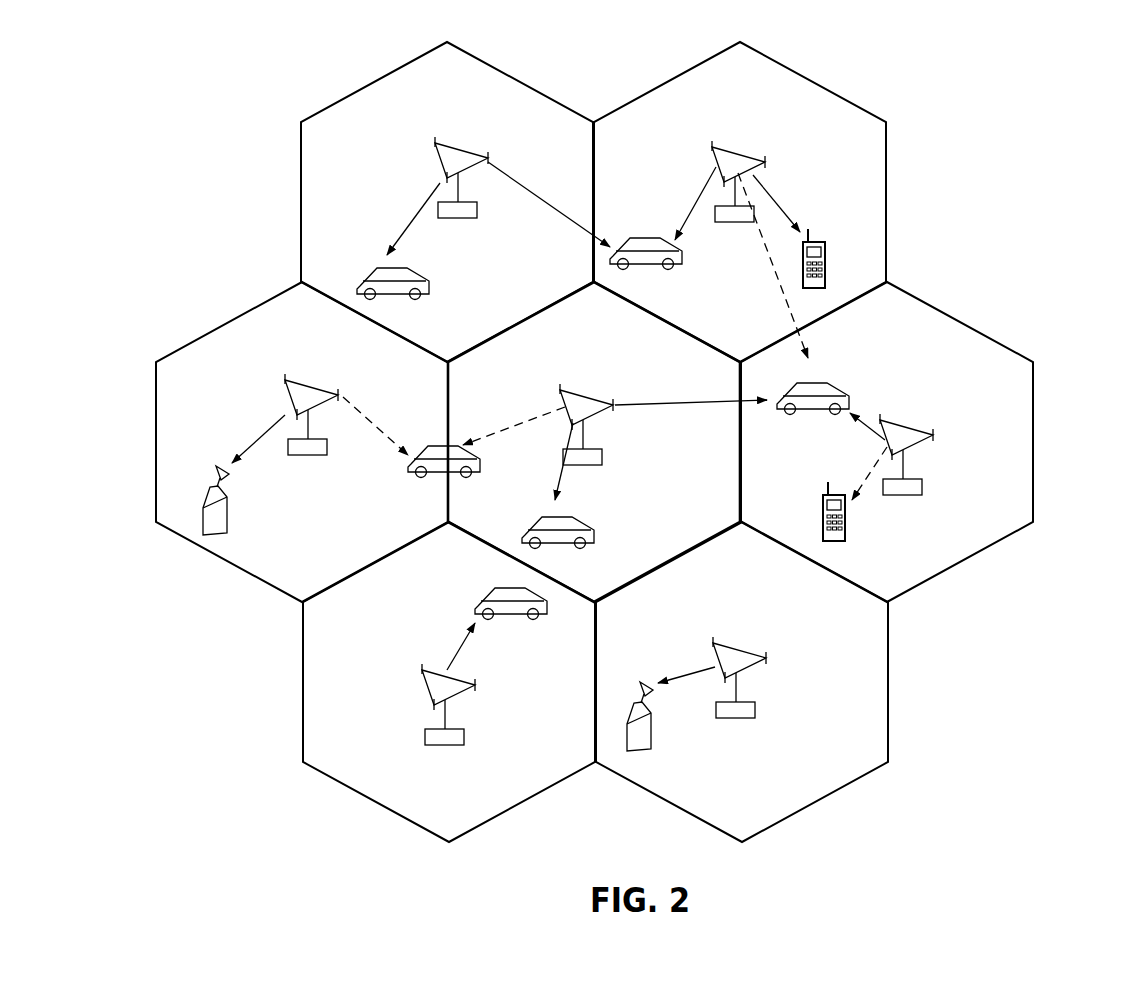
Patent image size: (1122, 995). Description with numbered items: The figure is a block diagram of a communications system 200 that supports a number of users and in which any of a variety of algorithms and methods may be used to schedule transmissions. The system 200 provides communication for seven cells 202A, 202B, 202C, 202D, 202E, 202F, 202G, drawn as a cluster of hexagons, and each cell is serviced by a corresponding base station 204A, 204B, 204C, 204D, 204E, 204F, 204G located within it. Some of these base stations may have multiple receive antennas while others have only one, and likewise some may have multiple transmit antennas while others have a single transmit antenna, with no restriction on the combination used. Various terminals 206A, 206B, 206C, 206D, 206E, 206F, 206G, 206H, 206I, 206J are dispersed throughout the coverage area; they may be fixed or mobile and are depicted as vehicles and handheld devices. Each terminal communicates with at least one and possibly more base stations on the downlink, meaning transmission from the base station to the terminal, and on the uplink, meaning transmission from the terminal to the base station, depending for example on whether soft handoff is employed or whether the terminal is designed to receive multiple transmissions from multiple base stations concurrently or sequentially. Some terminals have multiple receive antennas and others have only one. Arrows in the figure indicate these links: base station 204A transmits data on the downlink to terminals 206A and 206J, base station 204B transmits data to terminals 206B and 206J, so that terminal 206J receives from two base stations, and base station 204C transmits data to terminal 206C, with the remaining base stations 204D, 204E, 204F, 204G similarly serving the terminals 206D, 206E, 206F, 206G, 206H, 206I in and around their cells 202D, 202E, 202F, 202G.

The communications system 200 is at (138, 80).
The cell 202A is at (383, 76).
The cell 202B is at (803, 77).
The cell 202C is at (225, 325).
The cell 202D is at (630, 327).
The cell 202E is at (1034, 437).
The cell 202F is at (303, 687).
The cell 202G is at (888, 658).
The base station 204A is at (445, 148).
The base station 204B is at (723, 148).
The base station 204C is at (297, 383).
The base station 204D is at (573, 392).
The base station 204E is at (892, 427).
The base station 204F is at (422, 670).
The base station 204G is at (725, 650).
The terminal 206A is at (388, 272).
The terminal 206B is at (807, 243).
The terminal 206C is at (221, 472).
The terminal 206D is at (555, 517).
The terminal 206E is at (818, 383).
The terminal 206F is at (505, 590).
The terminal 206G is at (642, 683).
The terminal 206H is at (442, 447).
The terminal 206I is at (828, 500).
The terminal 206J is at (652, 238).